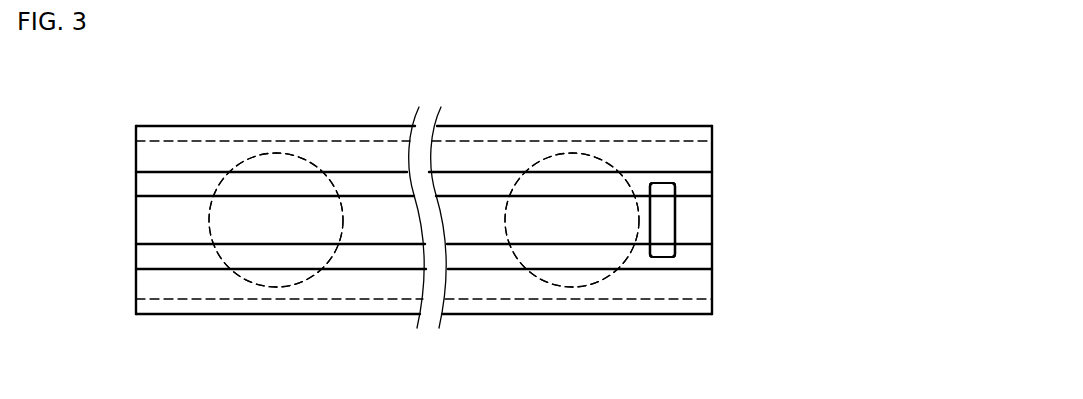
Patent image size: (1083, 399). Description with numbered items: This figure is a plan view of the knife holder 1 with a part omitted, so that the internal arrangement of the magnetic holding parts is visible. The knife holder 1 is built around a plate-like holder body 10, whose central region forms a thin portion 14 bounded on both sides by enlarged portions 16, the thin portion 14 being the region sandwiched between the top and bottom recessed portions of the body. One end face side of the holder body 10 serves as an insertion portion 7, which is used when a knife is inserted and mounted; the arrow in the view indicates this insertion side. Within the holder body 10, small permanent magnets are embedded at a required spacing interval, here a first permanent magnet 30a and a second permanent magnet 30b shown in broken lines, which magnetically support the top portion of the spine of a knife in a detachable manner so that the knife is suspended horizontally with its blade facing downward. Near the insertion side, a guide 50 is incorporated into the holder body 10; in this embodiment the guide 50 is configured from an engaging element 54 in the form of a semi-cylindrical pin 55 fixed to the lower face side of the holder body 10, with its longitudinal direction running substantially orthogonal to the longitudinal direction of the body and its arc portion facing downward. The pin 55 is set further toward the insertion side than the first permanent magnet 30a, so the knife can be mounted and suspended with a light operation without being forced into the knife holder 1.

The knife holder 1 is at (633, 110).
The insertion portion 7 is at (748, 223).
The holder body 10 is at (265, 150).
The thin portion 14 is at (143, 218).
The enlarged portions 16 is at (355, 132).
The first permanent magnet 30a is at (547, 157).
The second permanent magnet 30b is at (240, 162).
The guide 50 is at (662, 183).
The engaging element 54 is at (763, 163).
The pin 55 is at (791, 163).